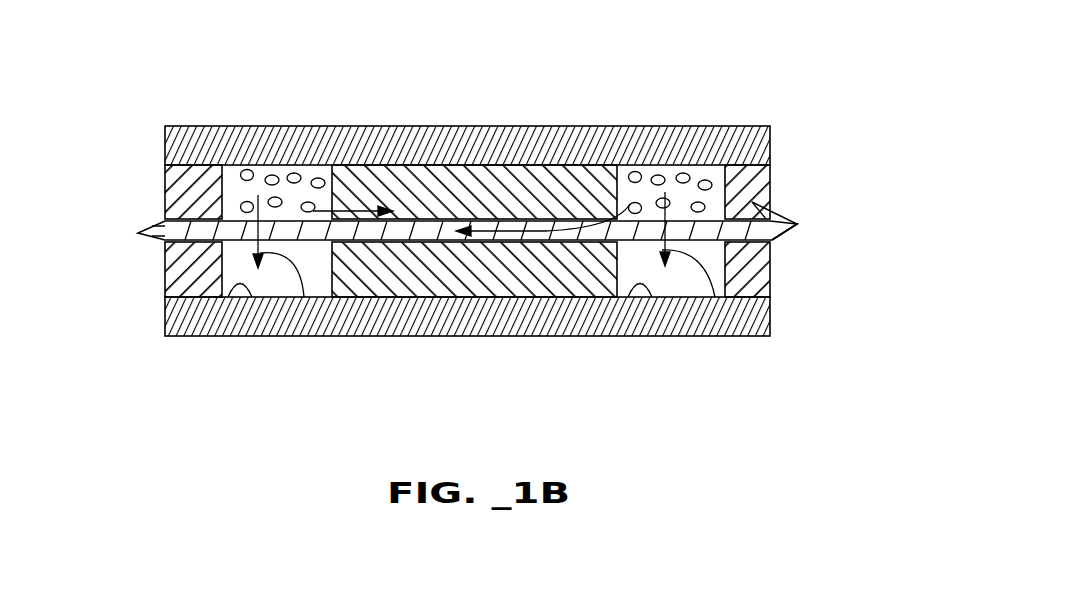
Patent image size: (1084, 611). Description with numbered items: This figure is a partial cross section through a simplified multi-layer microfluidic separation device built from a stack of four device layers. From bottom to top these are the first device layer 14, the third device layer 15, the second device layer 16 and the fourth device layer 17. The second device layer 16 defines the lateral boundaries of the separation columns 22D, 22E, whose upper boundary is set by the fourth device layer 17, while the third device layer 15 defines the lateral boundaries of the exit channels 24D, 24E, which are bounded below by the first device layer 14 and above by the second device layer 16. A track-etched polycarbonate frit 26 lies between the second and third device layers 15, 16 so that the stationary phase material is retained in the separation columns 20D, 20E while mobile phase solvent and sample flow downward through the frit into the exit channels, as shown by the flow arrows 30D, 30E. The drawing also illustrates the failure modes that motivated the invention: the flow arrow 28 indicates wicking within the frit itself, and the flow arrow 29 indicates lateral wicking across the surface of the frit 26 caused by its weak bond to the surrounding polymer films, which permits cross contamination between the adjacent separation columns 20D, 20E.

The first device layer 14 is at (770, 328).
The third device layer 15 is at (175, 277).
The second device layer 16 is at (755, 204).
The fourth device layer 17 is at (175, 143).
The separation column 20D is at (244, 170).
The separation column 20E is at (681, 172).
The separation column 22D is at (296, 172).
The separation column 22E is at (716, 176).
The exit channel 24D is at (228, 297).
The exit channel 24E is at (628, 297).
The frit 26 is at (756, 232).
The flow arrow 28 is at (532, 222).
The flow arrow 29 is at (340, 207).
The flow arrow 30D is at (304, 297).
The flow arrow 30E is at (715, 297).